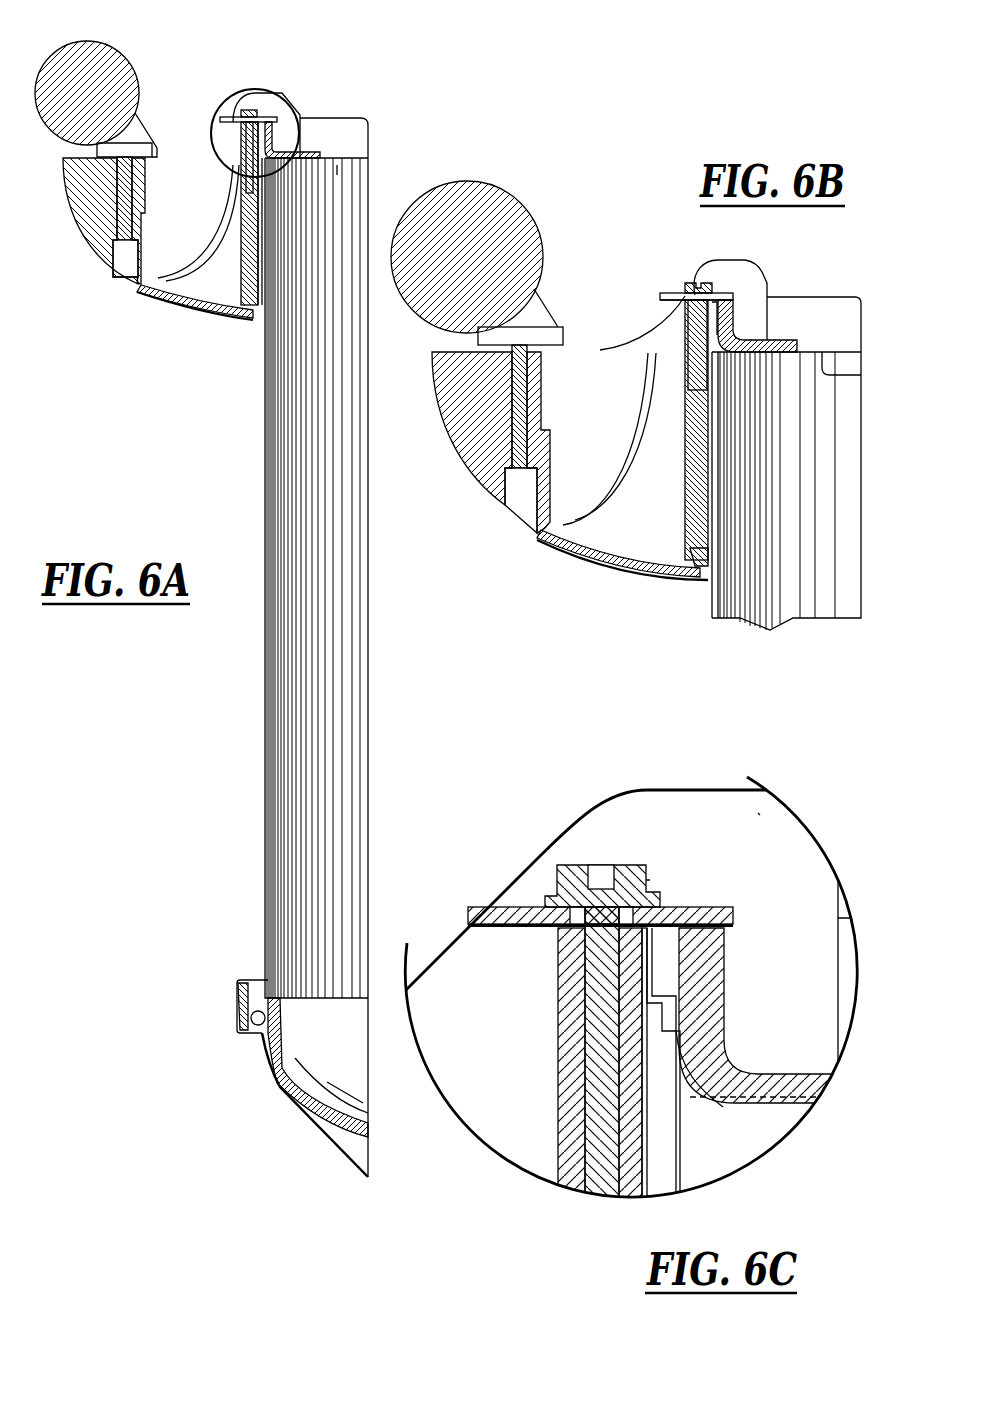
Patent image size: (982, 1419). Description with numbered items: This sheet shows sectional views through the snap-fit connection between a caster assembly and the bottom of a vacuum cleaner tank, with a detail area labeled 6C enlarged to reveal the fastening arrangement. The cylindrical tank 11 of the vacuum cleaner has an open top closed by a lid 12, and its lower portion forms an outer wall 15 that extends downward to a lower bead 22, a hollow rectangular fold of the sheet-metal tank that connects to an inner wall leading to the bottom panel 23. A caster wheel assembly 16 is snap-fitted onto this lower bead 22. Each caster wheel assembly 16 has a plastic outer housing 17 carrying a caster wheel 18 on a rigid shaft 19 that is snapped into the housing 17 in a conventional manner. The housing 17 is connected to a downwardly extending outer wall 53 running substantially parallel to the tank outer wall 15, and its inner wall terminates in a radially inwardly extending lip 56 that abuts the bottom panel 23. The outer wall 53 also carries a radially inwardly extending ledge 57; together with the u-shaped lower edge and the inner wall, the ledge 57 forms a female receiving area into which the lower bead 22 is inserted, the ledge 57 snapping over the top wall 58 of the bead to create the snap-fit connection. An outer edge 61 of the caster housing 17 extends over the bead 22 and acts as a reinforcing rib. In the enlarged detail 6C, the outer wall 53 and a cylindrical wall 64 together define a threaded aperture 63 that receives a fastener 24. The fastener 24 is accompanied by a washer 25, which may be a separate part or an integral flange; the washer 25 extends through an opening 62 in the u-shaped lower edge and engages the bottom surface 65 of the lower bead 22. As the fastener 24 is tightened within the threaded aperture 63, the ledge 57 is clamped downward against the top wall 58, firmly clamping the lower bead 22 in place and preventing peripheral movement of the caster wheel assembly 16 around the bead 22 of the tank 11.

In FIG. 6A, the cylindrical tank 11 is at (260, 650).
In FIG. 6A, the lid 12 is at (275, 1090).
In FIG. 6A, the outer wall 15 is at (263, 380).
In FIG. 6A, the caster wheel assembly 16 is at (85, 267).
In FIG. 6B, the caster wheel assembly 16 is at (500, 525).
In FIG. 6A, the outer housing 17 is at (157, 298).
In FIG. 6B, the outer housing 17 is at (598, 570).
In FIG. 6C, the outer housing 17 is at (556, 1009).
In FIG. 6A, the caster wheel 18 is at (102, 44).
In FIG. 6B, the caster wheel 18 is at (507, 202).
In FIG. 6A, the rigid shaft 19 is at (112, 216).
In FIG. 6B, the rigid shaft 19 is at (512, 412).
In FIG. 6A, the lower bead 22 is at (342, 117).
In FIG. 6B, the lower bead 22 is at (800, 297).
In FIG. 6C, the lower bead 22 is at (742, 967).
In FIG. 6A, the bottom panel 23 is at (337, 175).
In FIG. 6B, the bottom panel 23 is at (833, 376).
In FIG. 6B, the fastener 24 is at (683, 292).
In FIG. 6C, the fastener 24 is at (573, 865).
In FIG. 6B, the washer 25 is at (680, 297).
In FIG. 6C, the washer 25 is at (525, 907).
In FIG. 6C, the outer wall 53 is at (645, 1158).
In FIG. 6B, the radially inwardly extending lip 56 is at (768, 342).
In FIG. 6C, the radially inwardly extending lip 56 is at (812, 1086).
In FIG. 6C, the radially inwardly extending ledge 57 is at (655, 1025).
In FIG. 6C, the top wall 58 is at (682, 1185).
In FIG. 6A, the outer edge 61 is at (277, 107).
In FIG. 6B, the outer edge 61 is at (713, 267).
In FIG. 6C, the outer edge 61 is at (758, 813).
In FIG. 6C, the opening 62 is at (650, 885).
In FIG. 6C, the threaded aperture 63 is at (607, 1152).
In FIG. 6C, the cylindrical wall 64 is at (572, 1117).
In FIG. 6C, the bottom surface 65 is at (723, 1107).
In FIG. 6A, the detail circle for FIG. 6C is at (222, 98).